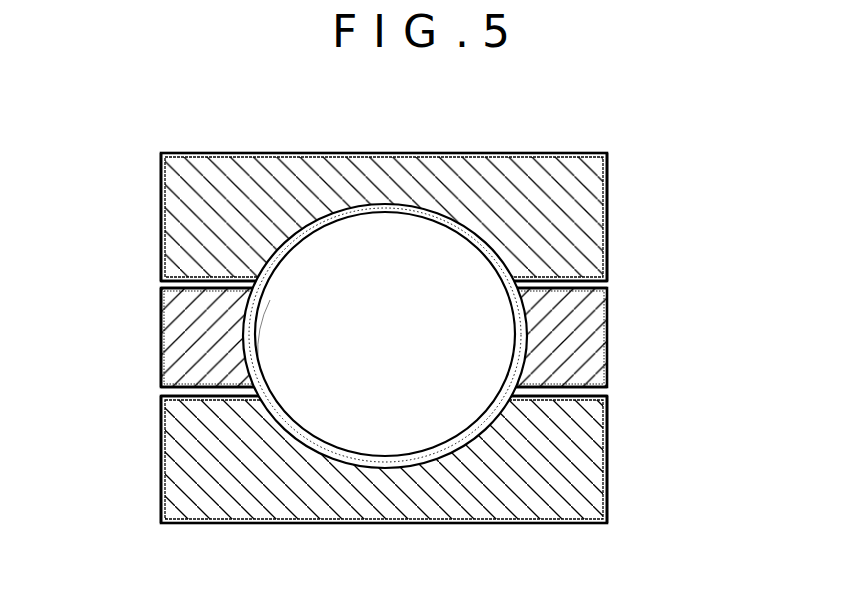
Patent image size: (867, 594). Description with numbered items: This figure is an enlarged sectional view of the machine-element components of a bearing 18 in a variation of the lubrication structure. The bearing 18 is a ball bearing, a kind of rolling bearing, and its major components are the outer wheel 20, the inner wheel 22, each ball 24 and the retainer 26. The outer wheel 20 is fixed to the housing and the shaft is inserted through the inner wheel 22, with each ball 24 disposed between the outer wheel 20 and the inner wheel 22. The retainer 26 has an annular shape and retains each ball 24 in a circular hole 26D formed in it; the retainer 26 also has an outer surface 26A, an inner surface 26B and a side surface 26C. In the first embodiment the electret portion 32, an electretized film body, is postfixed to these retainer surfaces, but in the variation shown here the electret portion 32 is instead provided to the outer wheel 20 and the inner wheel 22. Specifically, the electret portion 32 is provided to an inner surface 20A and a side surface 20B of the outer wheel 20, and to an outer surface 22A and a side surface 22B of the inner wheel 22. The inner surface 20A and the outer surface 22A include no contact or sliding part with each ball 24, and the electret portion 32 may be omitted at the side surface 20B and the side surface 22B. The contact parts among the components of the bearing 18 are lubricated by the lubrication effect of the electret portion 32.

The bearing 18 is at (700, 152).
The outer wheel 20 is at (521, 149).
The inner surface of the outer wheel 20A is at (588, 283).
The side surface of the outer wheel 20B is at (161, 178).
The inner wheel 22 is at (528, 535).
The outer surface of the inner wheel 22A is at (567, 396).
The side surface of the inner wheel 22B is at (161, 472).
The ball 24 is at (357, 268).
The retainer 26 is at (614, 333).
The outer surface of the retainer 26A is at (161, 285).
The inner surface of the retainer 26B is at (161, 392).
The side surface of the retainer 26C is at (160, 343).
The circular hole of the retainer 26D is at (257, 356).
The electret portion 32 is at (161, 225).